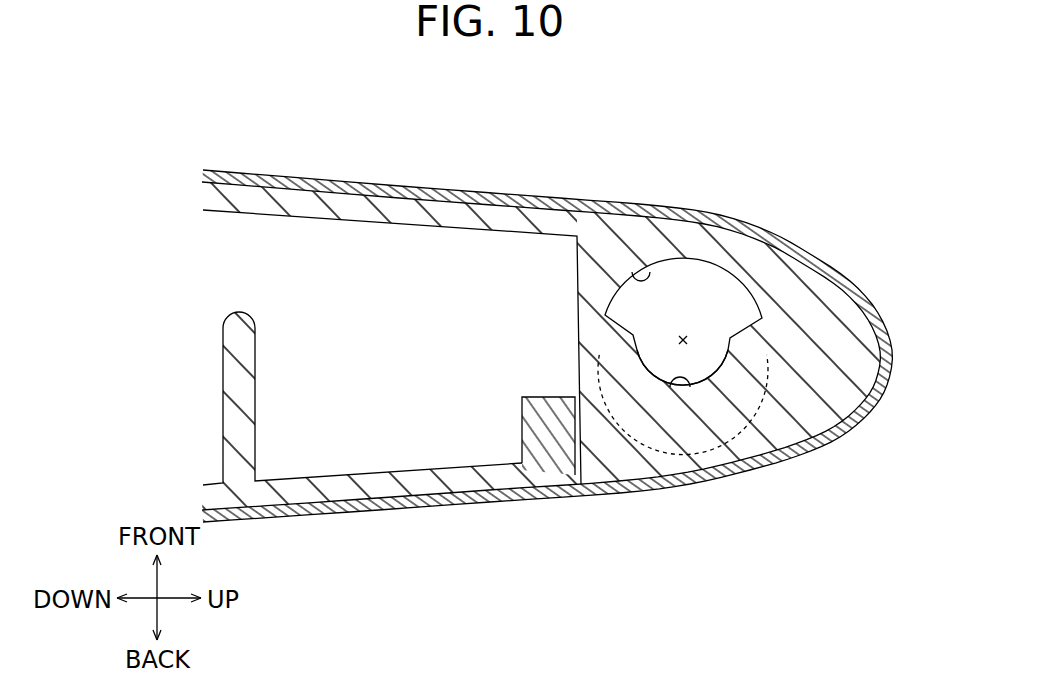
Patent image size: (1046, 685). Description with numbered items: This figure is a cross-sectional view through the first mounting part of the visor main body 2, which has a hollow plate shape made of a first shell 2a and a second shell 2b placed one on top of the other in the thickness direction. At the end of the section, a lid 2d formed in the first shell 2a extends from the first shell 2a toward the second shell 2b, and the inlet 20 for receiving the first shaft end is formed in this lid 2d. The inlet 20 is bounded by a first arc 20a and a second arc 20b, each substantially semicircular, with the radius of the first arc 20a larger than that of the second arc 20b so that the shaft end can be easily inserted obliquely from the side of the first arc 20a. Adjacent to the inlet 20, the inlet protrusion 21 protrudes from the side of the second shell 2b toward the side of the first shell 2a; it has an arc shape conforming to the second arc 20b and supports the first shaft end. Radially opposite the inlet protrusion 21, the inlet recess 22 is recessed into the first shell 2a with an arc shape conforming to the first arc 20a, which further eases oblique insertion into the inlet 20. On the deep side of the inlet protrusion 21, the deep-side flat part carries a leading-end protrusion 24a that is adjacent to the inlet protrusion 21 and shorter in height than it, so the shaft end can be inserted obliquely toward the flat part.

The visor main body 2 is at (450, 170).
The first shell 2a is at (532, 220).
The second shell 2b is at (428, 487).
The lid 2d is at (818, 283).
The inlet 20 is at (684, 330).
The first arc 20a is at (633, 268).
The second arc 20b is at (690, 375).
The inlet protrusion 21 is at (715, 400).
The inlet recess 22 is at (735, 268).
The leading-end protrusion 24a is at (548, 427).